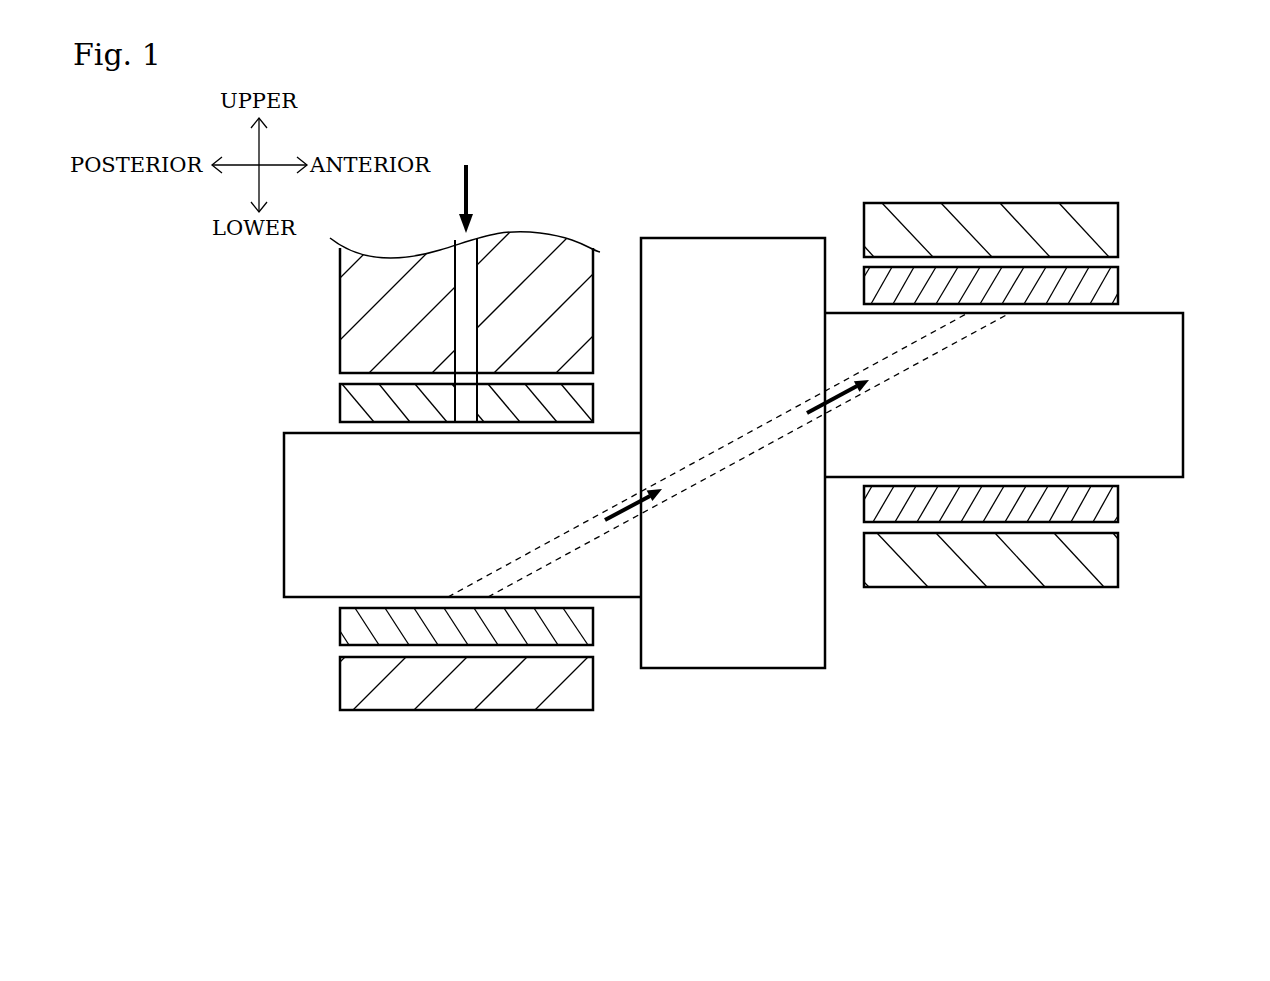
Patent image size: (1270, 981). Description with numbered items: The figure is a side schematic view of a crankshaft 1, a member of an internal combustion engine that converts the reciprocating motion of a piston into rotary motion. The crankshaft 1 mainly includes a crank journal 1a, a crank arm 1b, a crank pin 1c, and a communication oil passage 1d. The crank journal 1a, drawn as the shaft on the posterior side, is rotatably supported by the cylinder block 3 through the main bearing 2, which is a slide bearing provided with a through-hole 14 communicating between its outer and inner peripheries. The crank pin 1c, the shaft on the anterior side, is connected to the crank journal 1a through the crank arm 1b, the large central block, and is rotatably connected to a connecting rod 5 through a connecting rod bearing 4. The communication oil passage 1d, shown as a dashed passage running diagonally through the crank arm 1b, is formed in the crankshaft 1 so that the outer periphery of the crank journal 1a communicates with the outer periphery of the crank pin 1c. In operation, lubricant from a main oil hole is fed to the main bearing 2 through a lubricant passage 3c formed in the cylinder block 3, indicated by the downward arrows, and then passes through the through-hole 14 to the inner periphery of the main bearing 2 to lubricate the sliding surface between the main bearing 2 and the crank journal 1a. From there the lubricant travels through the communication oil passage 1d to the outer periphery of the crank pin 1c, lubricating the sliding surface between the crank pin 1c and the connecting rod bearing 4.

The crankshaft 1 is at (683, 160).
The crank journal 1a is at (296, 470).
The crank arm 1b is at (674, 250).
The crank pin 1c is at (1167, 345).
The communication oil passage 1d is at (740, 458).
The main bearing 2 is at (345, 628).
The cylinder block 3 is at (348, 312).
The lubricant passage 3c is at (460, 252).
The through-hole 14 is at (452, 410).
The connecting rod bearing 4 is at (1107, 503).
The connecting rod 5 is at (1107, 560).